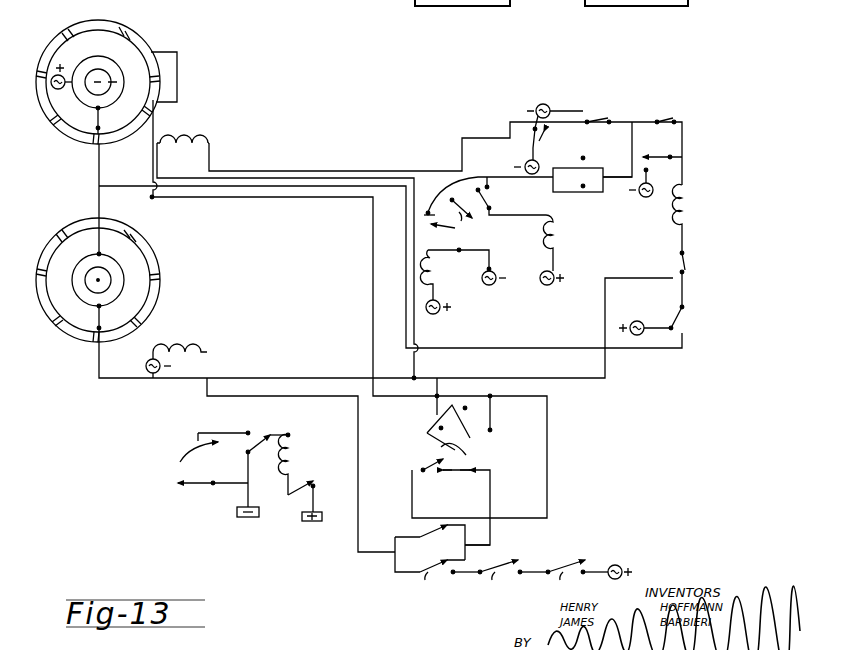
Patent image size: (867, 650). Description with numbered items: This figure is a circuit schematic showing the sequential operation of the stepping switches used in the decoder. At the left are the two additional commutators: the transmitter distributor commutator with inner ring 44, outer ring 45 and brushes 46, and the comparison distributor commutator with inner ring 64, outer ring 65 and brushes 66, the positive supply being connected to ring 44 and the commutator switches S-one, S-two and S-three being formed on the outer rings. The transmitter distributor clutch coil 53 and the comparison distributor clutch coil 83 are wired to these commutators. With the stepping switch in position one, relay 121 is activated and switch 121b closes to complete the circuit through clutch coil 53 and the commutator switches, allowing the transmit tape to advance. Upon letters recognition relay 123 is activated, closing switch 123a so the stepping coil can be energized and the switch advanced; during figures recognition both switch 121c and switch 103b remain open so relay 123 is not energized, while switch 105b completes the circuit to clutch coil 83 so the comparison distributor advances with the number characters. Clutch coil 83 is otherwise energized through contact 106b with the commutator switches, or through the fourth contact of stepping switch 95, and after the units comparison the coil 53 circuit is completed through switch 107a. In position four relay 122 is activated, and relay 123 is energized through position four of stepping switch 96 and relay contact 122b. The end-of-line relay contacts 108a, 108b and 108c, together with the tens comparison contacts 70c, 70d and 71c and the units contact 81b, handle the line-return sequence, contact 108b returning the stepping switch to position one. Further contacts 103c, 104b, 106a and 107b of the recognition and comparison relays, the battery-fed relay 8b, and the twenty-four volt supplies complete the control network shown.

The outer ring 45 is at (121, 32).
The inner ring 44 is at (98, 59).
The brushes 46 is at (99, 115).
The outer ring 65 is at (134, 233).
The inner ring 64 is at (101, 256).
The brushes 66 is at (96, 313).
The clutch coil 53 is at (188, 133).
The clutch coil 83 is at (176, 342).
The relay contact 108a is at (594, 119).
The switch 121c is at (658, 119).
The switch 121b is at (548, 149).
The relay 8b is at (583, 159).
The relay contact 81b is at (569, 194).
The switch 103b is at (661, 144).
The relay 123 is at (689, 211).
The relay contact 108c is at (688, 267).
The relay contact 122b is at (686, 322).
The stepping switch 96 is at (522, 247).
The switch 107a is at (474, 217).
The switch 106a is at (436, 236).
The relay 122 is at (562, 233).
The relay 121 is at (438, 277).
The stepping switch 95 is at (201, 470).
The relay contact 107b is at (465, 428).
The switch contact 106b is at (471, 453).
The switch 105b is at (422, 469).
The relay contact 104b is at (412, 500).
The relay contact 70d is at (442, 548).
The relay contact 71c is at (432, 580).
The relay contact 70c is at (484, 580).
The relay contact 103c is at (575, 580).
The relay contact 108b is at (255, 432).
The switch 123a is at (300, 479).